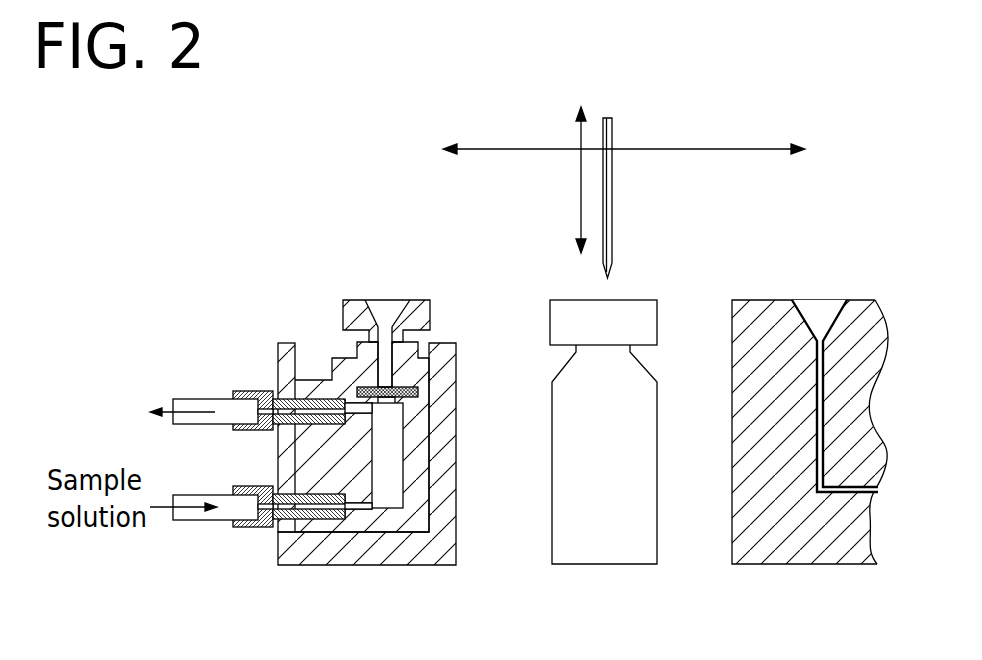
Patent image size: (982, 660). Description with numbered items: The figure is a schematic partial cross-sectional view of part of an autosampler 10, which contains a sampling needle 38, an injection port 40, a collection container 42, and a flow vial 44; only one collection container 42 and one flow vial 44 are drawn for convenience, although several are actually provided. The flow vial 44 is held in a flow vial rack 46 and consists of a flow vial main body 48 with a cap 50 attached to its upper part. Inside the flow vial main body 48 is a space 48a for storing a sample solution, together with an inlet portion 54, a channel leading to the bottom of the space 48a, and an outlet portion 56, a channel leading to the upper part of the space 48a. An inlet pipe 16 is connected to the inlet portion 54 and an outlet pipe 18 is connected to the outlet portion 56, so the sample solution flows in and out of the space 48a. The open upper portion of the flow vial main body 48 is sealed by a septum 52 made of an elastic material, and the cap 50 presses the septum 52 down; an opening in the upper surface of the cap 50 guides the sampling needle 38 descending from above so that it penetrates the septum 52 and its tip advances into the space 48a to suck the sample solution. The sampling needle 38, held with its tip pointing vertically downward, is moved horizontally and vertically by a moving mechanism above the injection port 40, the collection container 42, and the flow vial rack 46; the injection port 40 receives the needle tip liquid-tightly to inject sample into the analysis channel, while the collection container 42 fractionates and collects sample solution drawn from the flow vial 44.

The autosampler 10 is at (246, 152).
The inlet pipe 16 is at (190, 521).
The outlet pipe 18 is at (198, 398).
The sampling needle 38 is at (612, 187).
The injection port 40 is at (819, 310).
The collection container 42 is at (610, 538).
The flow vial 44 is at (399, 295).
The flow vial rack 46 is at (457, 346).
The flow vial main body 48 is at (336, 379).
The space 48a is at (382, 457).
The cap 50 is at (343, 300).
The septum 52 is at (404, 388).
The inlet portion 54 is at (354, 509).
The outlet portion 56 is at (357, 410).